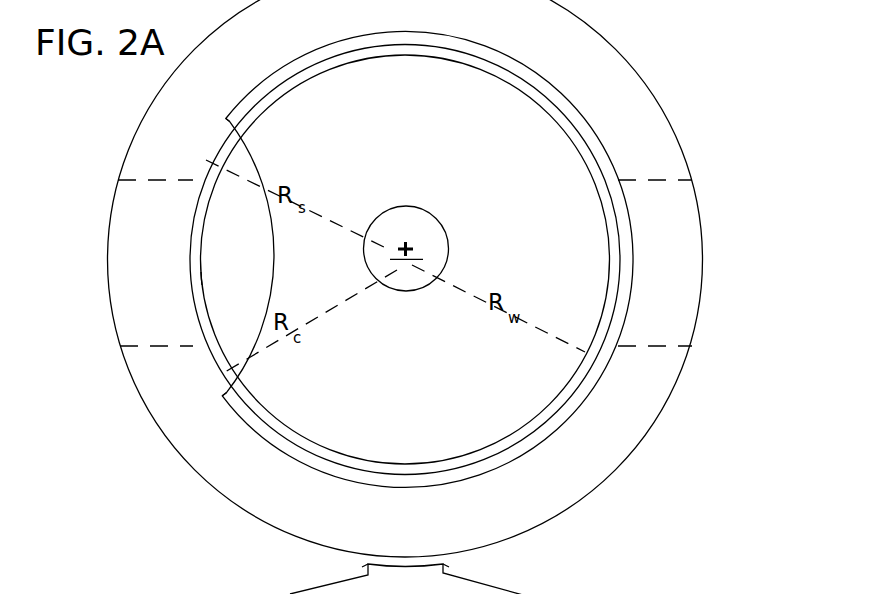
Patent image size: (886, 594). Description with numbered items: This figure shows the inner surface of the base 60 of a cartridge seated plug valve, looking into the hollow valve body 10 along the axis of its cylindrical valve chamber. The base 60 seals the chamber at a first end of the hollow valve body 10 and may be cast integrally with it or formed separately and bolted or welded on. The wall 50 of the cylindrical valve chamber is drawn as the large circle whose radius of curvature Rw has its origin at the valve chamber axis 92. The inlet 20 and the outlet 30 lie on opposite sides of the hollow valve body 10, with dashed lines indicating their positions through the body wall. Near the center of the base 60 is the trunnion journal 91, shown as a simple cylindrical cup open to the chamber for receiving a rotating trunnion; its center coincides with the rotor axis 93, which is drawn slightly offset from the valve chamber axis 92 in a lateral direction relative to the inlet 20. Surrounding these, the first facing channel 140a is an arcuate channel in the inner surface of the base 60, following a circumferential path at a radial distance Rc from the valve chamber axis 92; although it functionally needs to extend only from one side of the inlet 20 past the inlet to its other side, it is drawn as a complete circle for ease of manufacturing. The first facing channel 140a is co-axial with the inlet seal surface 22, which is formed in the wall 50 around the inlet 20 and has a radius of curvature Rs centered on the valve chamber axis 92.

The hollow valve body 10 is at (165, 433).
The inlet 20 is at (108, 262).
The inlet seal surface 22 is at (215, 145).
The outlet 30 is at (703, 242).
The wall 50 is at (532, 70).
The base 60 is at (423, 153).
The trunnion journal 91 is at (445, 230).
The valve chamber axis 92 is at (405, 261).
The rotor axis 93 is at (404, 247).
The first facing channel 140a is at (202, 285).